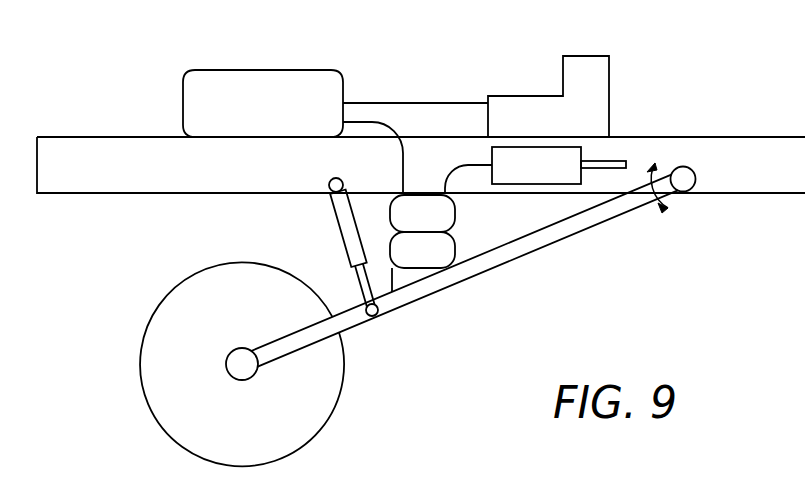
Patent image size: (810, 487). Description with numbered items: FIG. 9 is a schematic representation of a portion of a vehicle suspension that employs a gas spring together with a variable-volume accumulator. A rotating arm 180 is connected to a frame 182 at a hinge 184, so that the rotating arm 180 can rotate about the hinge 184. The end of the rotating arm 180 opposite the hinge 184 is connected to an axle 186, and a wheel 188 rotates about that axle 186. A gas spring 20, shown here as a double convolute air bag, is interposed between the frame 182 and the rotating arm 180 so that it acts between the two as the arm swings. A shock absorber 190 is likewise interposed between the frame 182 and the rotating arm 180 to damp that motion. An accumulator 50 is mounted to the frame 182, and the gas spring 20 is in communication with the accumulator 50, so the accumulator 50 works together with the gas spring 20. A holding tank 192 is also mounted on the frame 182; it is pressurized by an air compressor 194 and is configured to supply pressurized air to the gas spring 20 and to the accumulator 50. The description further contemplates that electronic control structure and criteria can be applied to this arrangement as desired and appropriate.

The frame 182 is at (105, 137).
The holding tank 192 is at (285, 68).
The air compressor 194 is at (590, 56).
The accumulator 50 is at (570, 147).
The gas spring 20 is at (455, 210).
The shock absorber 190 is at (347, 223).
The wheel 188 is at (320, 387).
The axle 186 is at (240, 362).
The rotating arm 180 is at (585, 228).
The hinge 184 is at (684, 181).